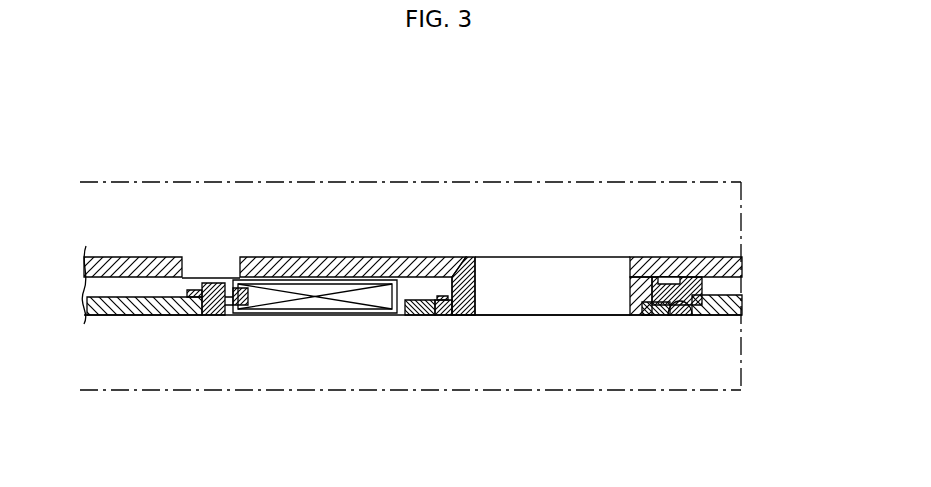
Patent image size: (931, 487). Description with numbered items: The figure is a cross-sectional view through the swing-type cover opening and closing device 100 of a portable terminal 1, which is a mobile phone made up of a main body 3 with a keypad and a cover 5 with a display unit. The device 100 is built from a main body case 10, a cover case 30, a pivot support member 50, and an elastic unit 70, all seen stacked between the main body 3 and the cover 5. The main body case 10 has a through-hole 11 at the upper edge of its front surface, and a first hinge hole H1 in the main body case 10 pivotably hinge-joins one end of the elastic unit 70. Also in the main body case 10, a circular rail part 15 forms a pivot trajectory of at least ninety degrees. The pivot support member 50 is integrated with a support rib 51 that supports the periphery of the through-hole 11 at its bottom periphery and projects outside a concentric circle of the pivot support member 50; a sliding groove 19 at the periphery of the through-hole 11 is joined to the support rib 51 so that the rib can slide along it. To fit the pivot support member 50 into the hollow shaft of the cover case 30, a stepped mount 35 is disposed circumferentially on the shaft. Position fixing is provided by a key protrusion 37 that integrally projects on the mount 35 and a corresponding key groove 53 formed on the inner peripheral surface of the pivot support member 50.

The swing-type cover opening and closing device 100 is at (427, 92).
The portable terminal 1 is at (791, 255).
The main body 3 is at (741, 347).
The cover 5 is at (741, 227).
The main body case 10 is at (152, 318).
The through-hole 11 is at (566, 296).
The circular rail part 15 is at (690, 318).
The sliding groove 19 is at (680, 318).
The cover case 30 is at (153, 256).
The mount 35 is at (468, 256).
The key protrusion 37 is at (464, 318).
The pivot support member 50 is at (447, 318).
The support rib 51 is at (430, 318).
The key groove 53 is at (648, 318).
The elastic unit 70 is at (315, 316).
The first hinge hole H1 is at (196, 318).